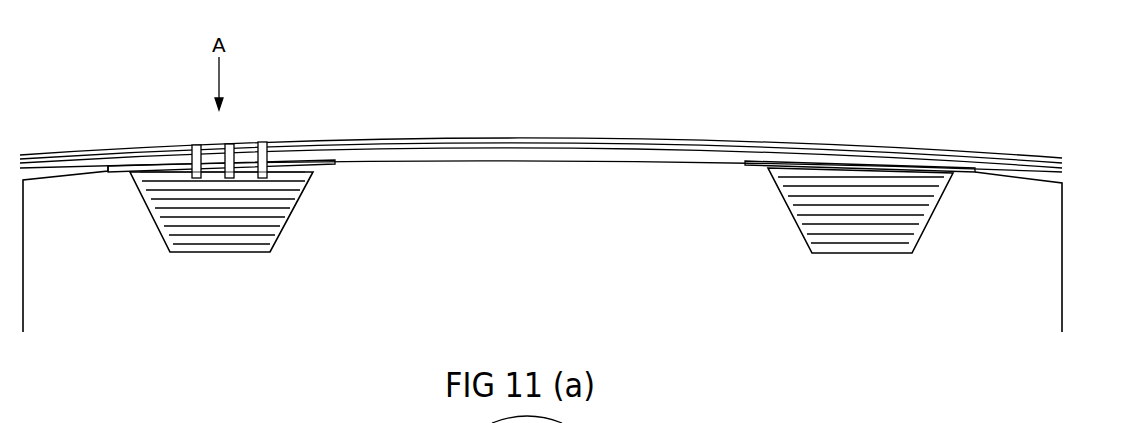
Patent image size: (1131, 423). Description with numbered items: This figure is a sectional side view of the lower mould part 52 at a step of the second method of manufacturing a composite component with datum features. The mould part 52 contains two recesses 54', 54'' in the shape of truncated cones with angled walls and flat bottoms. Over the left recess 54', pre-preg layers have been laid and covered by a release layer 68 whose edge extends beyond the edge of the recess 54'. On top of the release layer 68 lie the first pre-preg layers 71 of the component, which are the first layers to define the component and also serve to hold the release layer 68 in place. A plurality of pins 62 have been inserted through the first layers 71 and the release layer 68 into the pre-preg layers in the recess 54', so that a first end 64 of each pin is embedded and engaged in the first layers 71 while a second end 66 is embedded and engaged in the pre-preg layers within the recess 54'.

The mould part 52 is at (997, 288).
The recess 54' is at (178, 212).
The recess 54'' is at (900, 210).
The pins 62 is at (229, 144).
The first end 64 is at (195, 145).
The second end 66 is at (195, 178).
The release layer 68 is at (112, 148).
The pre-preg layers 71 is at (650, 142).